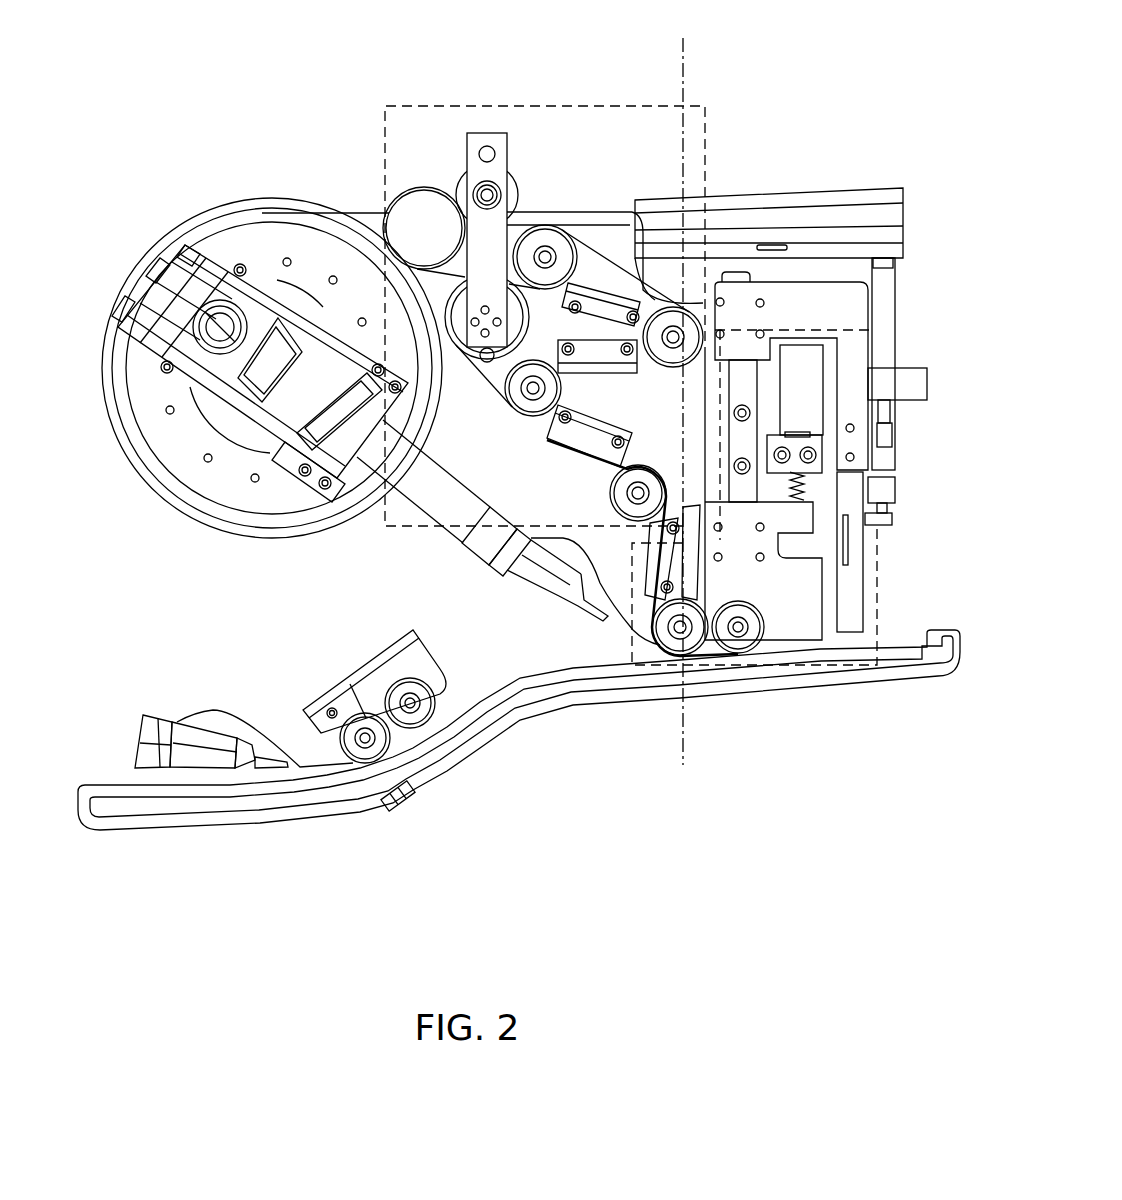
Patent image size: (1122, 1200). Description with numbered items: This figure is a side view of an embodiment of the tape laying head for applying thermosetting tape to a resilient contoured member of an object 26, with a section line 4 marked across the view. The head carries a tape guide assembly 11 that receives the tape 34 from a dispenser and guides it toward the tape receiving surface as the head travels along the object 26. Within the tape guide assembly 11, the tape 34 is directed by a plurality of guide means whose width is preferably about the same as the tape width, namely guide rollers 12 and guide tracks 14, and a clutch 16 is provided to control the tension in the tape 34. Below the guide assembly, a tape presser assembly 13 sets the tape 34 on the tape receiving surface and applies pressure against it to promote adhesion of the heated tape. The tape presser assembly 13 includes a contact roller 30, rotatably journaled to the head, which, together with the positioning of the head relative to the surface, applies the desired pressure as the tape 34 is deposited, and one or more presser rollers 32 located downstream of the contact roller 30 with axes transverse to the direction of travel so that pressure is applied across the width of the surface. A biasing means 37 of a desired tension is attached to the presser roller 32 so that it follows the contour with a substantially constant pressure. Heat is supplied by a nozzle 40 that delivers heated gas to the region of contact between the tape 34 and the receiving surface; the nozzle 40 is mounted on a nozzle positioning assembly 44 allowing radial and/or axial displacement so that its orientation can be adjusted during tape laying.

The section line 4- 4 is at (688, 53).
The tape guide assembly 11 is at (705, 175).
The guide rollers 12 is at (688, 334).
The tape presser assembly 13 is at (877, 590).
The guide tracks 14 is at (611, 311).
The clutch 16 is at (473, 143).
The object 26 is at (815, 678).
The contact roller 30 is at (650, 641).
The presser rollers 32 is at (765, 616).
The tape 34 is at (535, 418).
The biasing means 37 is at (807, 483).
The nozzle 40 is at (417, 490).
The nozzle positioning assembly 44 is at (262, 238).